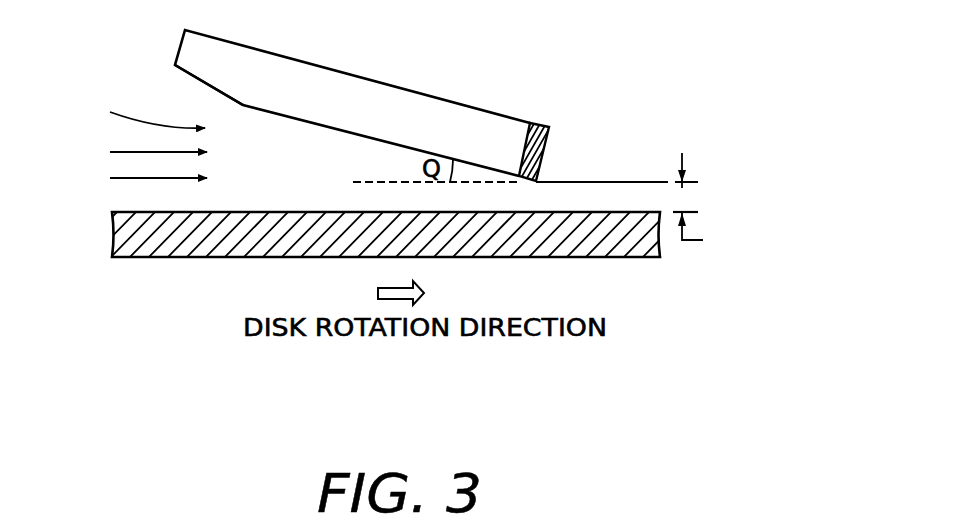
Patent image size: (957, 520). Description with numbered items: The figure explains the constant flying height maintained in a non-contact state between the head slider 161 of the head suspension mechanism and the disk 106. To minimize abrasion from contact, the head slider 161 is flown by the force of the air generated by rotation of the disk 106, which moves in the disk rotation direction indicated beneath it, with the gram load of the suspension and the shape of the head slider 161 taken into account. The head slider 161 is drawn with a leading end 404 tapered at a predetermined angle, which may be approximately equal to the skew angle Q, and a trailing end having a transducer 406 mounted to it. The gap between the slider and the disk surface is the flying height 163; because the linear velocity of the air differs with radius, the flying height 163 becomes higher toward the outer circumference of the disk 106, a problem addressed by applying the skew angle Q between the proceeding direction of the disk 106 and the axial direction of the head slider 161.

The head slider 161 is at (380, 87).
The leading end 404 is at (200, 82).
The transducer 406 is at (541, 122).
The disk 106 is at (207, 257).
The flying height 163 is at (715, 203).